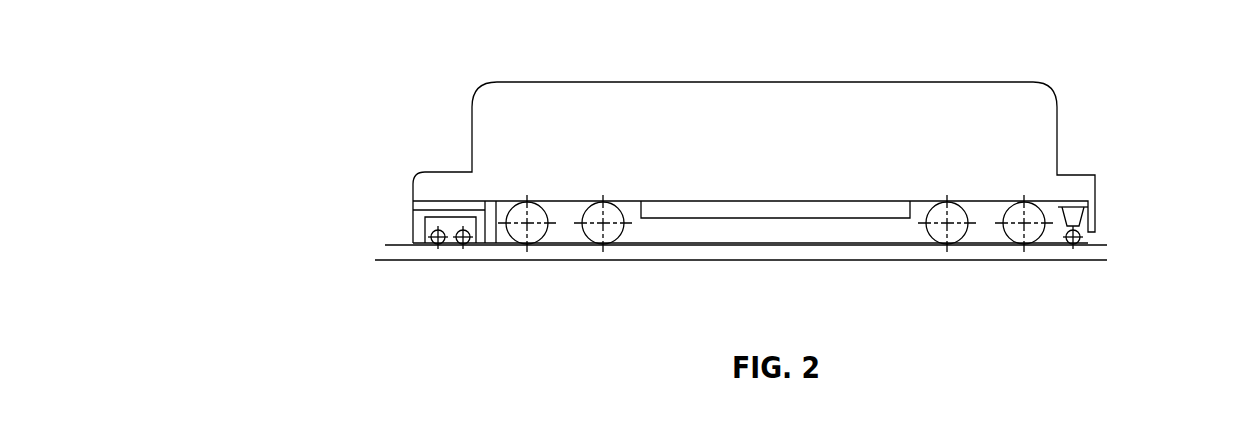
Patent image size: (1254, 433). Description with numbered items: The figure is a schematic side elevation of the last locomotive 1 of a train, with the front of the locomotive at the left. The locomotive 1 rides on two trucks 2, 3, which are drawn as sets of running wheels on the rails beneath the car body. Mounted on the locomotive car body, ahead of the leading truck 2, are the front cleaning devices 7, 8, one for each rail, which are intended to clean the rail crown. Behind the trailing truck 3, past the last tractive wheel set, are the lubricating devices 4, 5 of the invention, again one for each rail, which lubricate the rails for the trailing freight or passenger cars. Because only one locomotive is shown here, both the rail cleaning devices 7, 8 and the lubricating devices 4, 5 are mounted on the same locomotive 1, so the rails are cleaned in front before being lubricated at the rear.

The locomotive 1 is at (800, 141).
The truck 2 is at (565, 223).
The truck 3 is at (985, 223).
The lubricating device 4 is at (1150, 263).
The lubricating device 5 is at (1093, 238).
The cleaning device 7 is at (381, 259).
The cleaning device 8 is at (450, 237).